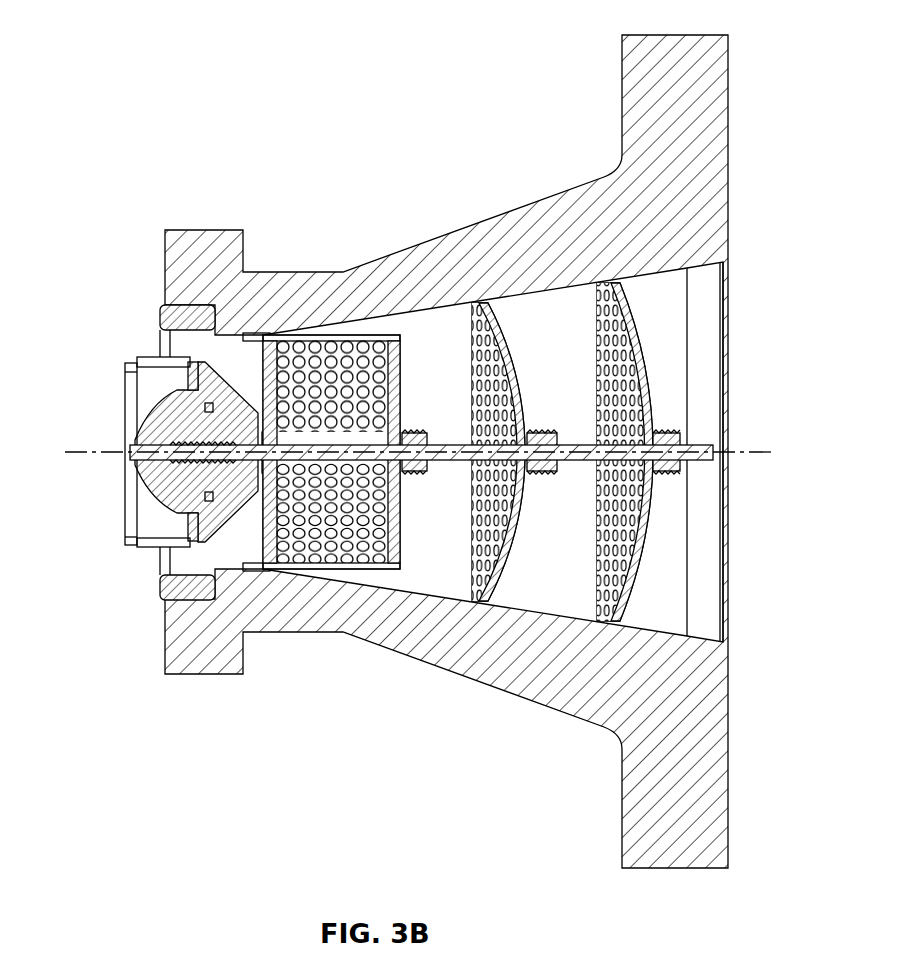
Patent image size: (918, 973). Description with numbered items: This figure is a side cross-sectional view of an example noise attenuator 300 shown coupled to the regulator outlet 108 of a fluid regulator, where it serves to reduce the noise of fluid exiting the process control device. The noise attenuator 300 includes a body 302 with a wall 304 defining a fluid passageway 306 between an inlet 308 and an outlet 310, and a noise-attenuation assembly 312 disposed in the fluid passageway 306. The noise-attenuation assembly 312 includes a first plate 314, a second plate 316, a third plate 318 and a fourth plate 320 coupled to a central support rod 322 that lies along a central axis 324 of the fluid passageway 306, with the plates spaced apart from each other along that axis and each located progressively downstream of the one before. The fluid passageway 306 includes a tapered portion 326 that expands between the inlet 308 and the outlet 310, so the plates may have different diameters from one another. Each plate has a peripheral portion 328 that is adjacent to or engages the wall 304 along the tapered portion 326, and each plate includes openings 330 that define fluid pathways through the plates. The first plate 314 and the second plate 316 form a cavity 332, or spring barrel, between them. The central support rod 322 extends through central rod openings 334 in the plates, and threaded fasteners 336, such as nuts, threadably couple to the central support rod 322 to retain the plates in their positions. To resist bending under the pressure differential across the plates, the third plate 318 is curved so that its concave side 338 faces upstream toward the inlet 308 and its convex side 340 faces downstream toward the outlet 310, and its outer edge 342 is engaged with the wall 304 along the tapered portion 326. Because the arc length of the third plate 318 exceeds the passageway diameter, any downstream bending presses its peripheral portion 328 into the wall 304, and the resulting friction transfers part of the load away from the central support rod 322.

The noise attenuator 300 is at (124, 70).
The regulator outlet 108 is at (122, 326).
The body 302 is at (203, 230).
The wall 304 is at (258, 573).
The fluid passageway 306 is at (246, 350).
The inlet 308 is at (150, 554).
The outlet 310 is at (745, 338).
The noise-attenuation assembly 312 is at (662, 545).
The first plate 314 is at (268, 333).
The second plate 316 is at (393, 335).
The third plate 318 is at (465, 303).
The fourth plate 320 is at (610, 330).
The central support rod 322 is at (712, 447).
The central axis 324 is at (110, 452).
The tapered portion 326 is at (565, 610).
The peripheral portion 328 is at (271, 567).
The openings 330 is at (470, 357).
The cavity 332 is at (322, 553).
The central rod openings 334 is at (657, 468).
The threaded fasteners 336 is at (672, 435).
The concave side 338 is at (500, 509).
The convex side 340 is at (512, 563).
The outer edge 342 is at (487, 600).